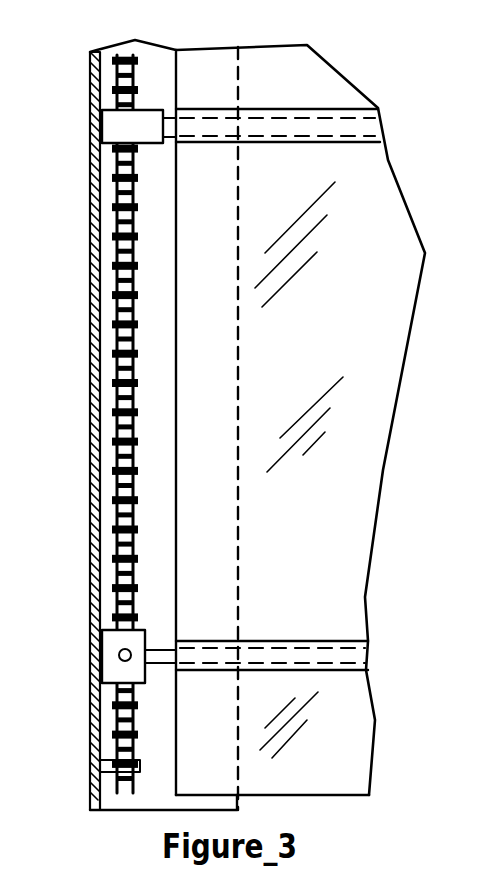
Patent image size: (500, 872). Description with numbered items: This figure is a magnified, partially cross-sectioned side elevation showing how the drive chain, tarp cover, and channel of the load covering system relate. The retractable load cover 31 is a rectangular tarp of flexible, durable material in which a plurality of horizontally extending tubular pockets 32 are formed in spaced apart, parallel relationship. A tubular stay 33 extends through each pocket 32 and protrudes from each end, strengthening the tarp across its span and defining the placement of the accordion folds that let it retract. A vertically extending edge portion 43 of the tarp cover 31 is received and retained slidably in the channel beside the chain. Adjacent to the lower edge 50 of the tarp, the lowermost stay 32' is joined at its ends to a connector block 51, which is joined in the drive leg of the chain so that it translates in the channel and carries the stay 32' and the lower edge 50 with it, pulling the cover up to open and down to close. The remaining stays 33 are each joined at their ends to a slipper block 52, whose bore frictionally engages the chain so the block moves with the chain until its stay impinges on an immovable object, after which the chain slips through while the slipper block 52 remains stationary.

The retractable load cover 31 is at (338, 463).
The tubular pocket 32 is at (285, 76).
The lowermost stay 32' is at (305, 614).
The tubular stay 33 is at (293, 125).
The vertically extending edge portion 43 is at (195, 418).
The lower edge 50 is at (318, 798).
The connector block 51 is at (117, 642).
The slipper block 52 is at (125, 122).